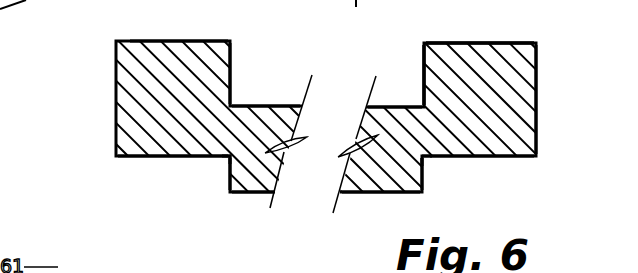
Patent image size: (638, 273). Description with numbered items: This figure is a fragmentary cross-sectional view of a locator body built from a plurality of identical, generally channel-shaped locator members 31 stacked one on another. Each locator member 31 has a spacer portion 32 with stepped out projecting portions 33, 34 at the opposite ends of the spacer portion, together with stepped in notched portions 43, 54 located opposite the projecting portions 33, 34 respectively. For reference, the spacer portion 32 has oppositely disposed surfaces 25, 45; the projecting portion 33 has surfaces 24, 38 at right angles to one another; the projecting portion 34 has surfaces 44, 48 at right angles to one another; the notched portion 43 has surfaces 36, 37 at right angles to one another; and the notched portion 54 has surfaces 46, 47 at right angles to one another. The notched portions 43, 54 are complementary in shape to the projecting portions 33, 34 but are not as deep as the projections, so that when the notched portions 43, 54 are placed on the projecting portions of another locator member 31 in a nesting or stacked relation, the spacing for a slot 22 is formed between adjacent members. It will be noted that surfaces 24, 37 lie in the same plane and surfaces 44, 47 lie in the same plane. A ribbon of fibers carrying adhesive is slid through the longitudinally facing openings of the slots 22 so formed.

The slot 22 is at (384, 194).
The surface 24 is at (233, 68).
The surface 25 is at (250, 106).
The locator member 31 is at (528, 34).
The spacer portion 32 is at (389, 107).
The projecting portion 33 is at (128, 77).
The projecting portion 34 is at (528, 78).
The surface 36 is at (155, 157).
The surface 37 is at (230, 174).
The surface 38 is at (213, 40).
The notched portion 43 is at (230, 159).
The surface 44 is at (424, 60).
The surface 45 is at (252, 194).
The surface 46 is at (514, 157).
The surface 47 is at (421, 184).
The surface 48 is at (478, 42).
The notched portion 54 is at (428, 160).